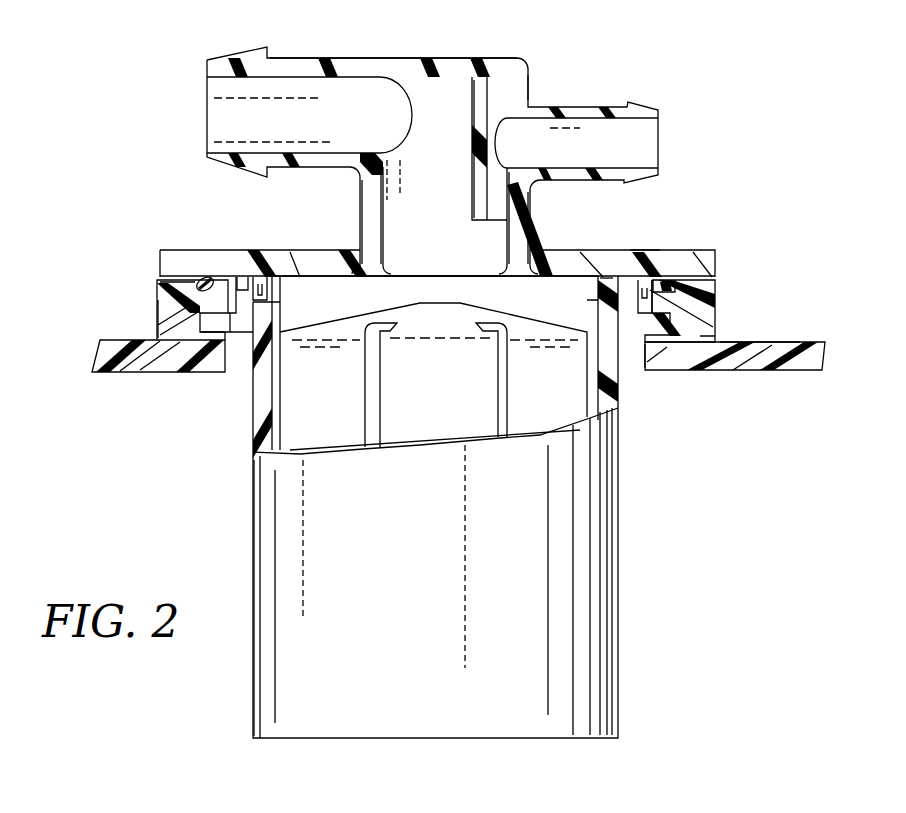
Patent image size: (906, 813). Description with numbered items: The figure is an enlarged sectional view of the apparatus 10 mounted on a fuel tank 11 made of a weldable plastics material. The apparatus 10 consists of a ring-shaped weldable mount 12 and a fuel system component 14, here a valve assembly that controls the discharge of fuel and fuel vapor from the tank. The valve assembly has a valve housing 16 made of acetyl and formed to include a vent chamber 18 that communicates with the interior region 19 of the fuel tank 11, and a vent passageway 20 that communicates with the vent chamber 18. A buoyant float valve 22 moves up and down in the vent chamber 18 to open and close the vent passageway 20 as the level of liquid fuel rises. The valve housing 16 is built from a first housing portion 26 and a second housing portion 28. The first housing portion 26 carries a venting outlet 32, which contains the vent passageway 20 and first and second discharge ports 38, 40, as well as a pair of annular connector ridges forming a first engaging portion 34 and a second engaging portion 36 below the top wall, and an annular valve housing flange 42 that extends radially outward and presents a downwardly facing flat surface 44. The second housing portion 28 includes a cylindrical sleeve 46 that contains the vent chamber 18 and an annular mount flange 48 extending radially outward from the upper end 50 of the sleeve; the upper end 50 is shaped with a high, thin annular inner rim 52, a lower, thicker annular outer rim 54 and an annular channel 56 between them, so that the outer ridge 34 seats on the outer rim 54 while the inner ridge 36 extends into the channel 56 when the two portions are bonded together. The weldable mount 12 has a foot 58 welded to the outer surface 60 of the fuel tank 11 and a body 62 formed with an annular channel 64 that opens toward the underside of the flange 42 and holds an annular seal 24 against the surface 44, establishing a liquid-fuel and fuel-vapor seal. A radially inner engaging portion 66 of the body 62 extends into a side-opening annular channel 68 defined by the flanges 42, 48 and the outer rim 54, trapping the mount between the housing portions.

The apparatus 10 is at (685, 60).
The fuel tank 11 is at (123, 365).
The weldable mount 12 is at (113, 291).
The fuel system component 14 is at (592, 85).
The valve housing 16 is at (545, 243).
The vent chamber 18 is at (329, 292).
The interior region 19 is at (762, 398).
The vent passageway 20 is at (388, 223).
The float valve 22 is at (420, 413).
The annular seal 24 is at (203, 278).
The first housing portion 26 is at (544, 63).
The second housing portion 28 is at (637, 553).
The venting outlet 32 is at (415, 57).
The first engaging portion 34 is at (273, 332).
The second engaging portion 36 is at (262, 285).
The first discharge port 38 is at (207, 75).
The second discharge port 40 is at (658, 122).
The annular valve housing flange 42 is at (167, 262).
The downwardly facing flat surface 44 is at (160, 295).
The cylindrical sleeve 46 is at (262, 430).
The annular mount flange 48 is at (208, 338).
The upper end 50 is at (575, 288).
The annular inner rim 52 is at (607, 278).
The annular outer rim 54 is at (645, 253).
The annular channel 56 is at (587, 335).
The foot 58 is at (175, 345).
The outer surface 60 is at (757, 342).
The body 62 is at (160, 303).
The annular channel 64 is at (230, 297).
The engaging portion 66 is at (700, 307).
The side-opening annular channel 68 is at (236, 264).